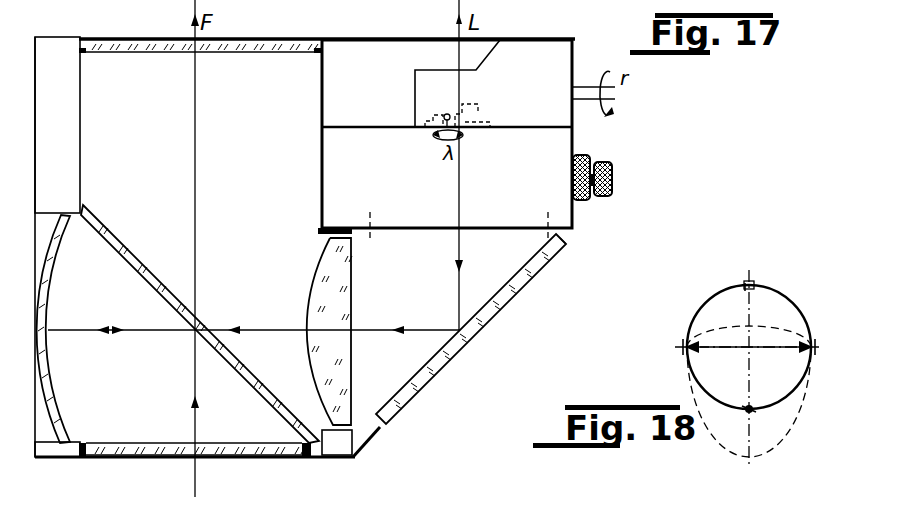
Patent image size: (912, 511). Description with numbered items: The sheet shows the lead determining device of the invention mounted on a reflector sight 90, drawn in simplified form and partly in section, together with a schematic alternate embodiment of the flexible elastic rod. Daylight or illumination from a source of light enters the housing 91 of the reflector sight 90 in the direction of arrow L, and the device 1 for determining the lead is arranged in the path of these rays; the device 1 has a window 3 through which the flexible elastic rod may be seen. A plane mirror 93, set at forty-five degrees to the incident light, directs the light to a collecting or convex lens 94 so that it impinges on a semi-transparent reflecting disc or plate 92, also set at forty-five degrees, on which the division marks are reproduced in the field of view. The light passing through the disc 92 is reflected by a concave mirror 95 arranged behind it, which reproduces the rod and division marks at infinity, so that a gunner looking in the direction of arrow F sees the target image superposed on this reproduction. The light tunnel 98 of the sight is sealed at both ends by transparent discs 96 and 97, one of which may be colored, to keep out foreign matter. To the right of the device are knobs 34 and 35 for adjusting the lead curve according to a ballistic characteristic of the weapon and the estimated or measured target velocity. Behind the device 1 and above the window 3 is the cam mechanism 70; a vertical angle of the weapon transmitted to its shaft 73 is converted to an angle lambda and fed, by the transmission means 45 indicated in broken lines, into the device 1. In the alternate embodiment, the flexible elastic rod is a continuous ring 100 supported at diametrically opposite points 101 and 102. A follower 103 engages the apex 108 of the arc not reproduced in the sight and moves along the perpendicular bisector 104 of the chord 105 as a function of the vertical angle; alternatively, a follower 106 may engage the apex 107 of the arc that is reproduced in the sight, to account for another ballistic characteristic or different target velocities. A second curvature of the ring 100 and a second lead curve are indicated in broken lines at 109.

In FIG. 17, the lead determining device 1 is at (560, 152).
In FIG. 17, the window 3 is at (548, 229).
In FIG. 17, the knob 34 is at (612, 186).
In FIG. 17, the knob 35 is at (582, 201).
In FIG. 17, the light source 45 is at (430, 131).
In FIG. 17, the cam mechanism 70 is at (535, 55).
In FIG. 17, the shaft 73 is at (588, 86).
In FIG. 17, the reflector sight 90 is at (322, 33).
In FIG. 17, the housing 91 is at (384, 40).
In FIG. 17, the semi-transparent reflecting disc 92 is at (238, 358).
In FIG. 17, the plane mirror 93 is at (482, 320).
In FIG. 17, the collecting lens 94 is at (340, 352).
In FIG. 17, the concave mirror 95 is at (55, 395).
In FIG. 17, the transparent disc 96 is at (240, 450).
In FIG. 17, the transparent disc 97 is at (148, 45).
In FIG. 17, the light tunnel 98 is at (148, 428).
In FIG. 18, the continuous ring 100 is at (785, 406).
In FIG. 18, the support point 101 is at (682, 352).
In FIG. 18, the support point 102 is at (812, 352).
In FIG. 18, the follower 103 is at (751, 411).
In FIG. 18, the perpendicular bisector 104 is at (750, 318).
In FIG. 18, the chord 105 is at (730, 349).
In FIG. 18, the follower 106 is at (744, 285).
In FIG. 18, the apex 107 is at (754, 285).
In FIG. 18, the apex 108 is at (746, 410).
In FIG. 18, the second curvature 109 is at (765, 455).